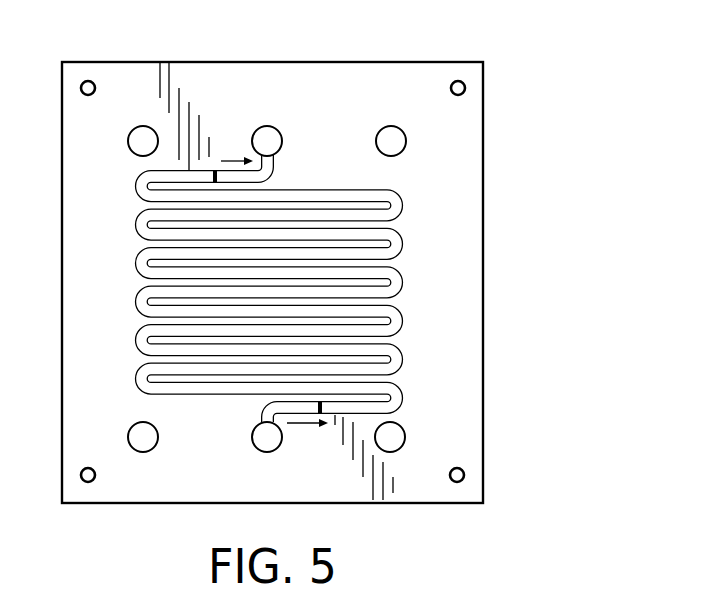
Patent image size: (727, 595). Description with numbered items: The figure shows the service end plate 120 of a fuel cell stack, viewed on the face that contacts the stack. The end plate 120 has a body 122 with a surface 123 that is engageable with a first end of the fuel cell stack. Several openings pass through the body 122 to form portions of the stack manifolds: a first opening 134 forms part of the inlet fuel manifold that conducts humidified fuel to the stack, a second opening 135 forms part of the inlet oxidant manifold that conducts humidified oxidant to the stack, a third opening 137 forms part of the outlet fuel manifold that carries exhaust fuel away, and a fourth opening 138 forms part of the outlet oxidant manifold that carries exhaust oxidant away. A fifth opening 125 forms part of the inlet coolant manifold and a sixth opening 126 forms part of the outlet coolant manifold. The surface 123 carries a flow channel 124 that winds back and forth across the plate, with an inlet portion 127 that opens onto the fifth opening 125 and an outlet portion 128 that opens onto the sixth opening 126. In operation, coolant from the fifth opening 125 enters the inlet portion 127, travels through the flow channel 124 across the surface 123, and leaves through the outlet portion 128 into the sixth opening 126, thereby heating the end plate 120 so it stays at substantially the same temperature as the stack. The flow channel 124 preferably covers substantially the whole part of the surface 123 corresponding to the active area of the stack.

The service end plate 120 is at (570, 76).
The body 122 is at (483, 237).
The surface 123 is at (465, 362).
The flow channel 124 is at (268, 268).
The fifth opening 125 is at (266, 449).
The sixth opening 126 is at (266, 133).
The inlet portion 127 is at (265, 410).
The outlet portion 128 is at (278, 160).
The first opening 134 is at (142, 449).
The second opening 135 is at (403, 445).
The third opening 137 is at (391, 133).
The fourth opening 138 is at (143, 133).